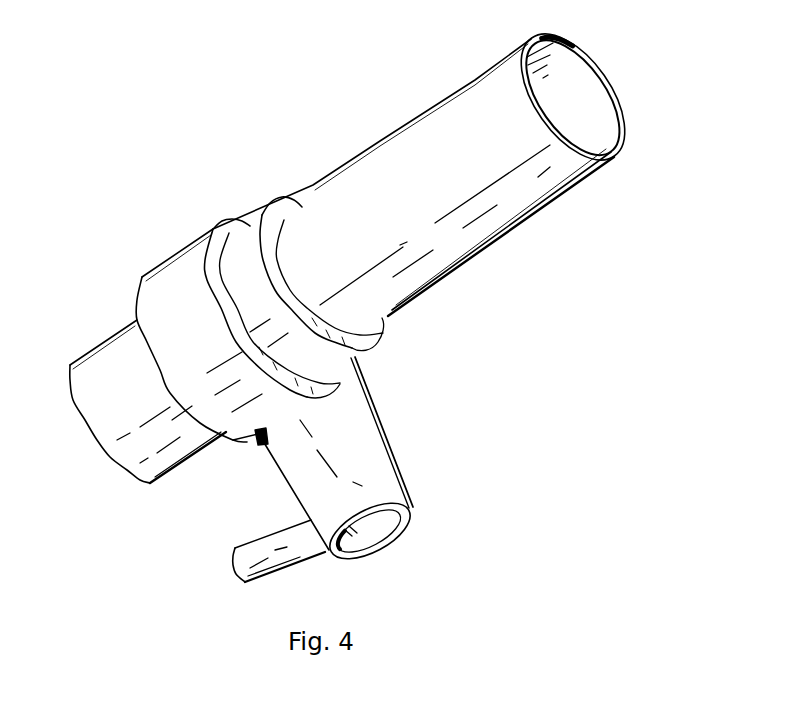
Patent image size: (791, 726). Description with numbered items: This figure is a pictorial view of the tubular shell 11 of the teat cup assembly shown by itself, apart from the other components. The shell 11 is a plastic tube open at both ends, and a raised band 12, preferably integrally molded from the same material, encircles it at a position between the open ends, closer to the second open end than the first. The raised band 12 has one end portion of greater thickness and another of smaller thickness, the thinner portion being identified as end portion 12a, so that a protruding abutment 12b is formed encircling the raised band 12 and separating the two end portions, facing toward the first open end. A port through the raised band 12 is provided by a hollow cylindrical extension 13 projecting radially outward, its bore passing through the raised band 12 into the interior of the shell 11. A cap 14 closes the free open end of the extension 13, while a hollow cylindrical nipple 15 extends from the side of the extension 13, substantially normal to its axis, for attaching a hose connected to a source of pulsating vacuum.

The tubular shell 11 is at (447, 252).
The raised band 12 is at (162, 287).
The end portion of raised band having smaller thickness 12a is at (250, 227).
The protruding abutment 12b is at (217, 247).
The cylindrical extension 13 is at (371, 488).
The cap 14 is at (387, 538).
The cylindrical nipple 15 is at (270, 553).